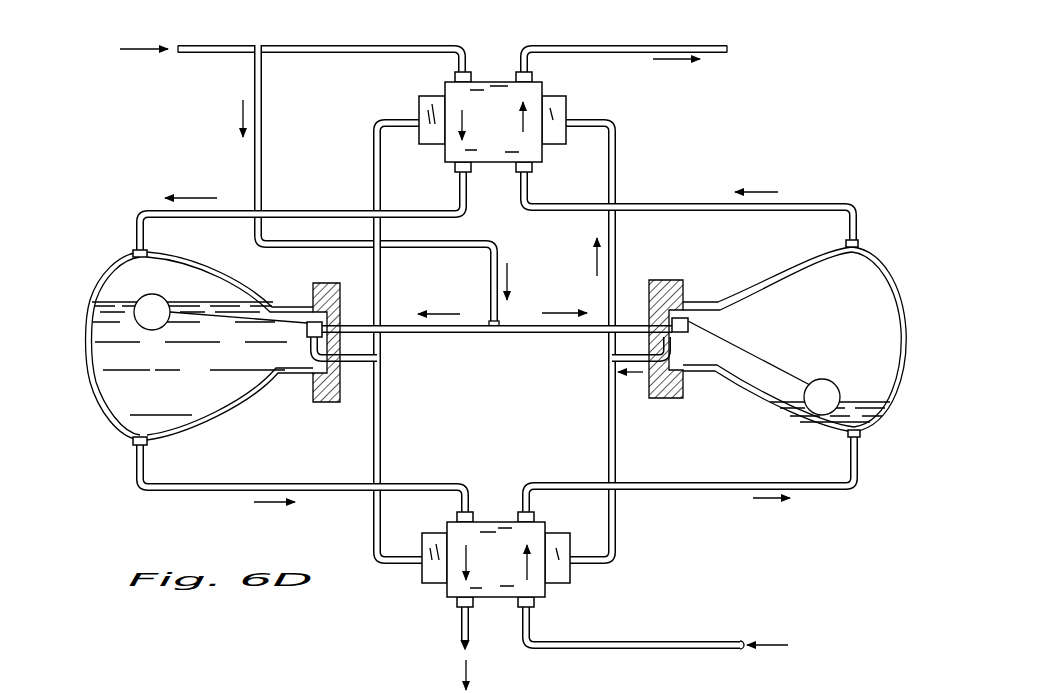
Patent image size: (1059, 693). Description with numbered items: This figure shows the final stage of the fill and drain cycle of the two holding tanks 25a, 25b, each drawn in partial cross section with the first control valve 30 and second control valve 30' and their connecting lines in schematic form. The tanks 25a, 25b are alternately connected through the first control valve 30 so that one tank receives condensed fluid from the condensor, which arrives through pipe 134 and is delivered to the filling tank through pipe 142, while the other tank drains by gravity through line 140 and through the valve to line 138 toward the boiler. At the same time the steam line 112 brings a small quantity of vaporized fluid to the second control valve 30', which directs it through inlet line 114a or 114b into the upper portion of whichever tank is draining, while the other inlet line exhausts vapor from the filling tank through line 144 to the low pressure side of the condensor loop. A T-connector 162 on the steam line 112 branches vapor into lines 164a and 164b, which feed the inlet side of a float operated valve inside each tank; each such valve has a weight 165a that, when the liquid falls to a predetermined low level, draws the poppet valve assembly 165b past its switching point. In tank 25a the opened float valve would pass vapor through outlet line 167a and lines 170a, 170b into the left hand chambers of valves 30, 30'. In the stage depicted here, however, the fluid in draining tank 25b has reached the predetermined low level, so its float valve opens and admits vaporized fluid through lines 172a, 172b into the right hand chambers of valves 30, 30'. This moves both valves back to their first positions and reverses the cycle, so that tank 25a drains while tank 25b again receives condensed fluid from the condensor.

The steam line 112 is at (204, 45).
The T-connector 162 is at (259, 45).
The line 144 is at (671, 43).
The second control valve 30' is at (562, 122).
The inlet line 114a is at (152, 210).
The inlet line 114b is at (810, 203).
The weight 165a is at (154, 294).
The poppet valve assembly 165b is at (309, 321).
The outlet line 167a is at (313, 350).
The line 170b is at (381, 283).
The line 170a is at (381, 441).
The line 164a is at (447, 333).
The line 164b is at (578, 333).
The line 172b is at (616, 247).
The line 172a is at (616, 441).
The first control valve 30 is at (496, 514).
The line 140 is at (197, 485).
The pipe 142 is at (827, 488).
The line 138 is at (462, 623).
The pipe 134 is at (698, 651).
The tank 25a is at (101, 432).
The tank 25b is at (895, 420).